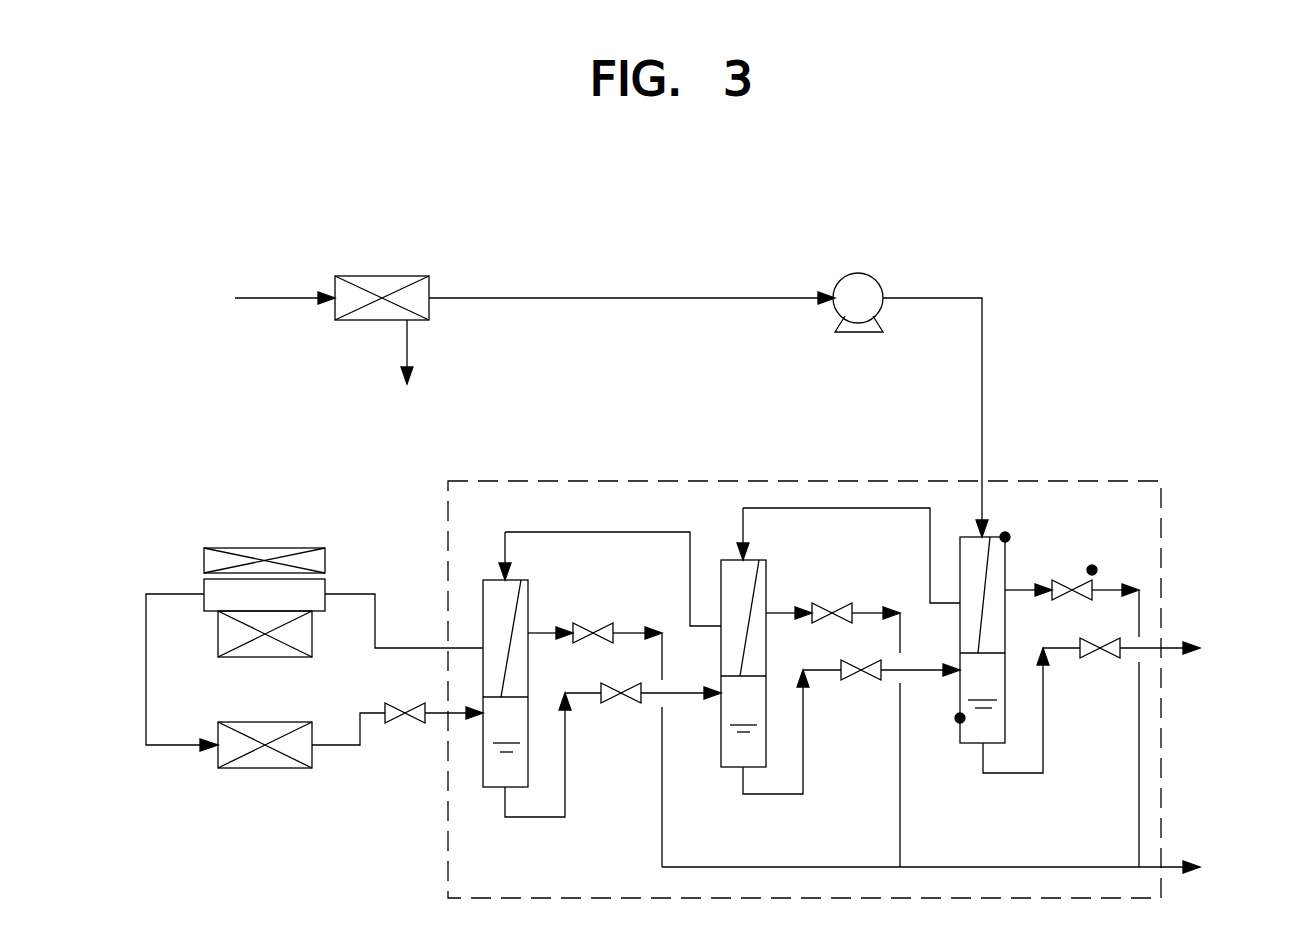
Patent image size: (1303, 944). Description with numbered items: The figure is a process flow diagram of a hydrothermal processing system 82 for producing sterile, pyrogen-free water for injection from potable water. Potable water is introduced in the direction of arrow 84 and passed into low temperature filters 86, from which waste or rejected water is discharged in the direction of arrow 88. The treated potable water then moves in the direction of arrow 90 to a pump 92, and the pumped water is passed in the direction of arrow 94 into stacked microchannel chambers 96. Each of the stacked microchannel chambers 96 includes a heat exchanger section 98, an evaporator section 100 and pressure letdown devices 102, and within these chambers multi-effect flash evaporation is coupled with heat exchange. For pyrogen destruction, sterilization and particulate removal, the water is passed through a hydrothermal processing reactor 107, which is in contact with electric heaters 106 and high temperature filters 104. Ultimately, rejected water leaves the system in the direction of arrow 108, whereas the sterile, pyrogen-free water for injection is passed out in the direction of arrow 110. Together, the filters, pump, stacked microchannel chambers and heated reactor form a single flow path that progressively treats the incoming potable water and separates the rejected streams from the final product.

The hydrothermal processing system 82 is at (798, 216).
The arrow 84 is at (253, 297).
The low temperature filters 86 is at (382, 276).
The arrow 88 is at (407, 348).
The arrow 90 is at (612, 297).
The pump 92 is at (868, 285).
The arrow 94 is at (982, 350).
The stacked microchannel chambers 96 is at (755, 480).
The heat exchanger section 98 is at (483, 592).
The evaporator section 100 is at (489, 772).
The pressure letdown devices 102 is at (397, 728).
The high temperature filters 104 is at (267, 770).
The electric heaters 106 is at (254, 528).
The hydrothermal processing reactor 107 is at (213, 602).
The arrow 108 is at (1168, 645).
The arrow 110 is at (1168, 865).